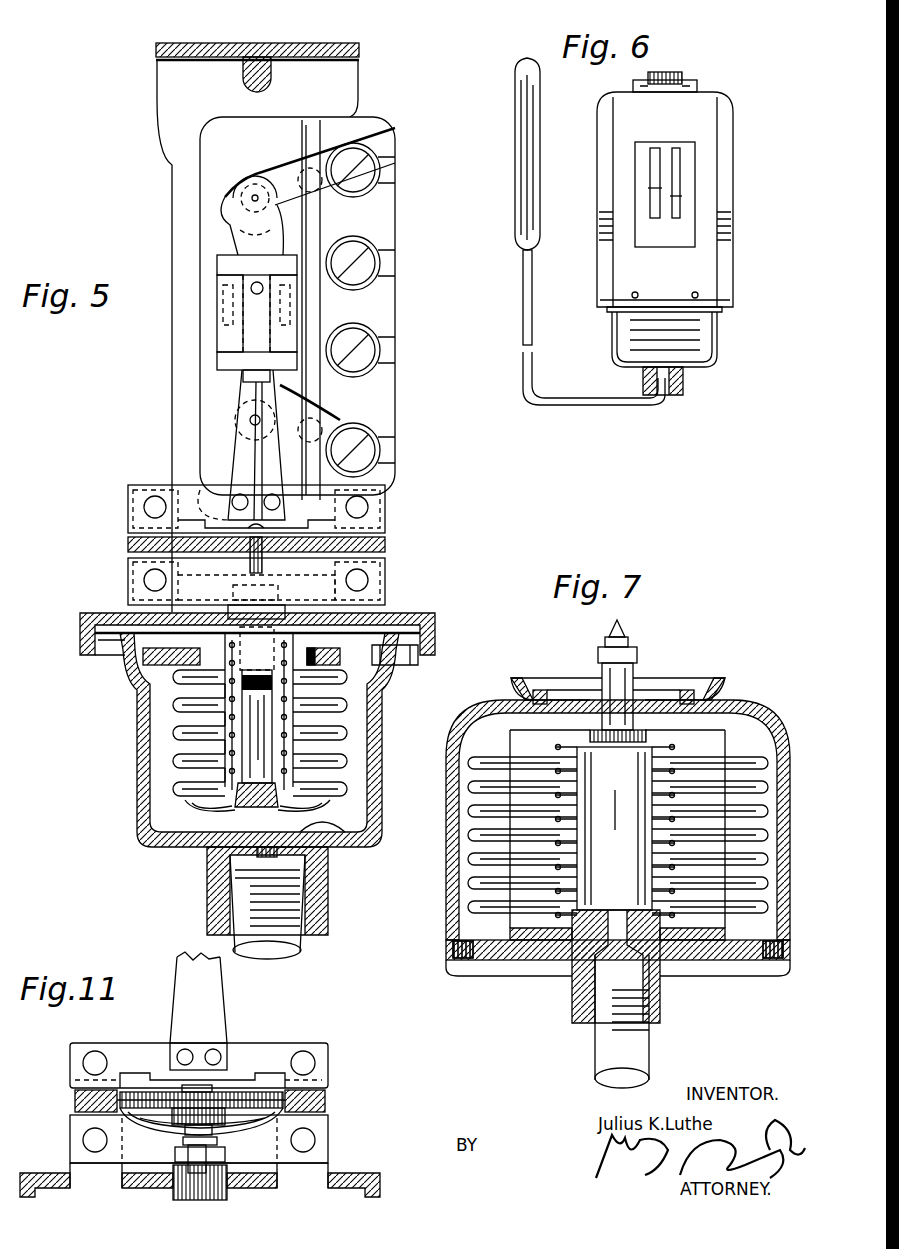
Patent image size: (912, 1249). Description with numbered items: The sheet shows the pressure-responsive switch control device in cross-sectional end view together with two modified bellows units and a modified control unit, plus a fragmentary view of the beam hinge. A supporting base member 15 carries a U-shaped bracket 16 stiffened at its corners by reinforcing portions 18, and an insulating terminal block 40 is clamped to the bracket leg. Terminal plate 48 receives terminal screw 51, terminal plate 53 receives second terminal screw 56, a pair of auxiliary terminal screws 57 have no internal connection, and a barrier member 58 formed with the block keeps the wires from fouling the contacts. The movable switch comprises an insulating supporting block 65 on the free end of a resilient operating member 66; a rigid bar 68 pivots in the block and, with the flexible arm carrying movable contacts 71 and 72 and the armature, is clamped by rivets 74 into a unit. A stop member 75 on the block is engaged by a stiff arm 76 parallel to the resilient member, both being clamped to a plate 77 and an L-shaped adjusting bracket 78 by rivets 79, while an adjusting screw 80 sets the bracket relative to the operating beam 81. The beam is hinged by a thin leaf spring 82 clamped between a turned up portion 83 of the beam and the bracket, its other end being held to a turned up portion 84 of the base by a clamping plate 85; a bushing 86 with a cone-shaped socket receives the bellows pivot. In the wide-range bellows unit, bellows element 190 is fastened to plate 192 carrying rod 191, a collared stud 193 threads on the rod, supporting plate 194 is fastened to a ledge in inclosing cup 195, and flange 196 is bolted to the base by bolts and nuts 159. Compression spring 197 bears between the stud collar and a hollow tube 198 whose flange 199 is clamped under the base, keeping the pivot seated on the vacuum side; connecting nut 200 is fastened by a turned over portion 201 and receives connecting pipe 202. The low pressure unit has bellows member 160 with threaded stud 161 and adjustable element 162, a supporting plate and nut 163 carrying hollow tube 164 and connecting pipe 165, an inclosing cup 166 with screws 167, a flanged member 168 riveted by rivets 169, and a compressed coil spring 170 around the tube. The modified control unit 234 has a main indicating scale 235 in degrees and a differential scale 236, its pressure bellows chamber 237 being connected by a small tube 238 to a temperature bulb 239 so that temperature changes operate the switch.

In FIG. 5, the supporting base member 15 is at (92, 613).
In FIG. 11, the supporting base member 15 is at (360, 1180).
In FIG. 5, the U-shaped bracket 16 is at (170, 80).
In FIG. 5, the reinforcing portions 18 is at (265, 76).
In FIG. 5, the terminal block 40 is at (212, 137).
In FIG. 5, the terminal plate 48 is at (288, 145).
In FIG. 5, the terminal screw 51 is at (338, 172).
In FIG. 5, the terminal plate 53 is at (340, 420).
In FIG. 5, the second terminal screw 56 is at (370, 455).
In FIG. 5, the auxiliary terminal screws 57 is at (367, 327).
In FIG. 5, the barrier member 58 is at (313, 233).
In FIG. 5, the insulating supporting block 65 is at (217, 265).
In FIG. 5, the resilient operating member 66 is at (240, 445).
In FIG. 11, the resilient operating member 66 is at (213, 990).
In FIG. 5, the rigid bar 68 is at (245, 240).
In FIG. 5, the movable contact 71 is at (245, 185).
In FIG. 5, the movable contact 72 is at (245, 405).
In FIG. 5, the rivets 74 is at (252, 291).
In FIG. 5, the stop member 75 is at (245, 362).
In FIG. 5, the stiff arm 76 is at (248, 465).
In FIG. 11, the plate 77 is at (228, 1048).
In FIG. 5, the L-shaped adjusting bracket 78 is at (192, 492).
In FIG. 11, the L-shaped adjusting bracket 78 is at (290, 1050).
In FIG. 5, the rivets 79 is at (155, 507).
In FIG. 11, the rivets 79 is at (92, 1066).
In FIG. 5, the adjusting screw 80 is at (256, 522).
In FIG. 5, the operating beam 81 is at (128, 545).
In FIG. 11, the operating beam 81 is at (165, 1098).
In FIG. 5, the hinge leaf spring 82 is at (330, 588).
In FIG. 11, the hinge leaf spring 82 is at (88, 1105).
In FIG. 11, the turned up portion of beam 83 is at (325, 1090).
In FIG. 5, the turned up portion of base plate 84 is at (140, 575).
In FIG. 11, the turned up portion of base plate 84 is at (305, 1172).
In FIG. 11, the clamping plate 85 is at (80, 1128).
In FIG. 11, the bushing 86 is at (195, 1087).
In FIG. 5, the bolts and nuts 159 is at (415, 660).
In FIG. 7, the bellows member 160 is at (500, 852).
In FIG. 7, the threaded stud 161 is at (603, 672).
In FIG. 7, the adjustable element 162 is at (624, 633).
In FIG. 7, the supporting plate and nut 163 is at (572, 985).
In FIG. 7, the hollow tube 164 is at (618, 812).
In FIG. 7, the connecting pipe 165 is at (605, 1052).
In FIG. 7, the inclosing cup 166 is at (447, 895).
In FIG. 7, the screws 167 is at (450, 945).
In FIG. 7, the flanged member 168 is at (530, 655).
In FIG. 7, the rivets 169 is at (686, 690).
In FIG. 7, the compressed coil spring 170 is at (668, 752).
In FIG. 5, the bellows element 190 is at (180, 752).
In FIG. 5, the rod 191 is at (257, 738).
In FIG. 5, the plate 192 is at (205, 810).
In FIG. 5, the stud 193 is at (242, 612).
In FIG. 5, the supporting plate 194 is at (132, 668).
In FIG. 5, the inclosing cup 195 is at (140, 787).
In FIG. 5, the flange 196 is at (112, 655).
In FIG. 5, the compression spring 197 is at (300, 718).
In FIG. 5, the hollow tube 198 is at (293, 735).
In FIG. 5, the flange 199 is at (122, 640).
In FIG. 5, the connecting nut 200 is at (207, 880).
In FIG. 5, the turned over portion 201 is at (345, 840).
In FIG. 5, the connecting pipe 202 is at (280, 952).
In FIG. 6, the control unit 234 is at (692, 117).
In FIG. 6, the main indicating scale 235 is at (635, 158).
In FIG. 6, the differential scale 236 is at (695, 158).
In FIG. 6, the pressure bellows chamber 237 is at (700, 335).
In FIG. 6, the small tube 238 is at (545, 385).
In FIG. 6, the temperature bulb 239 is at (528, 180).